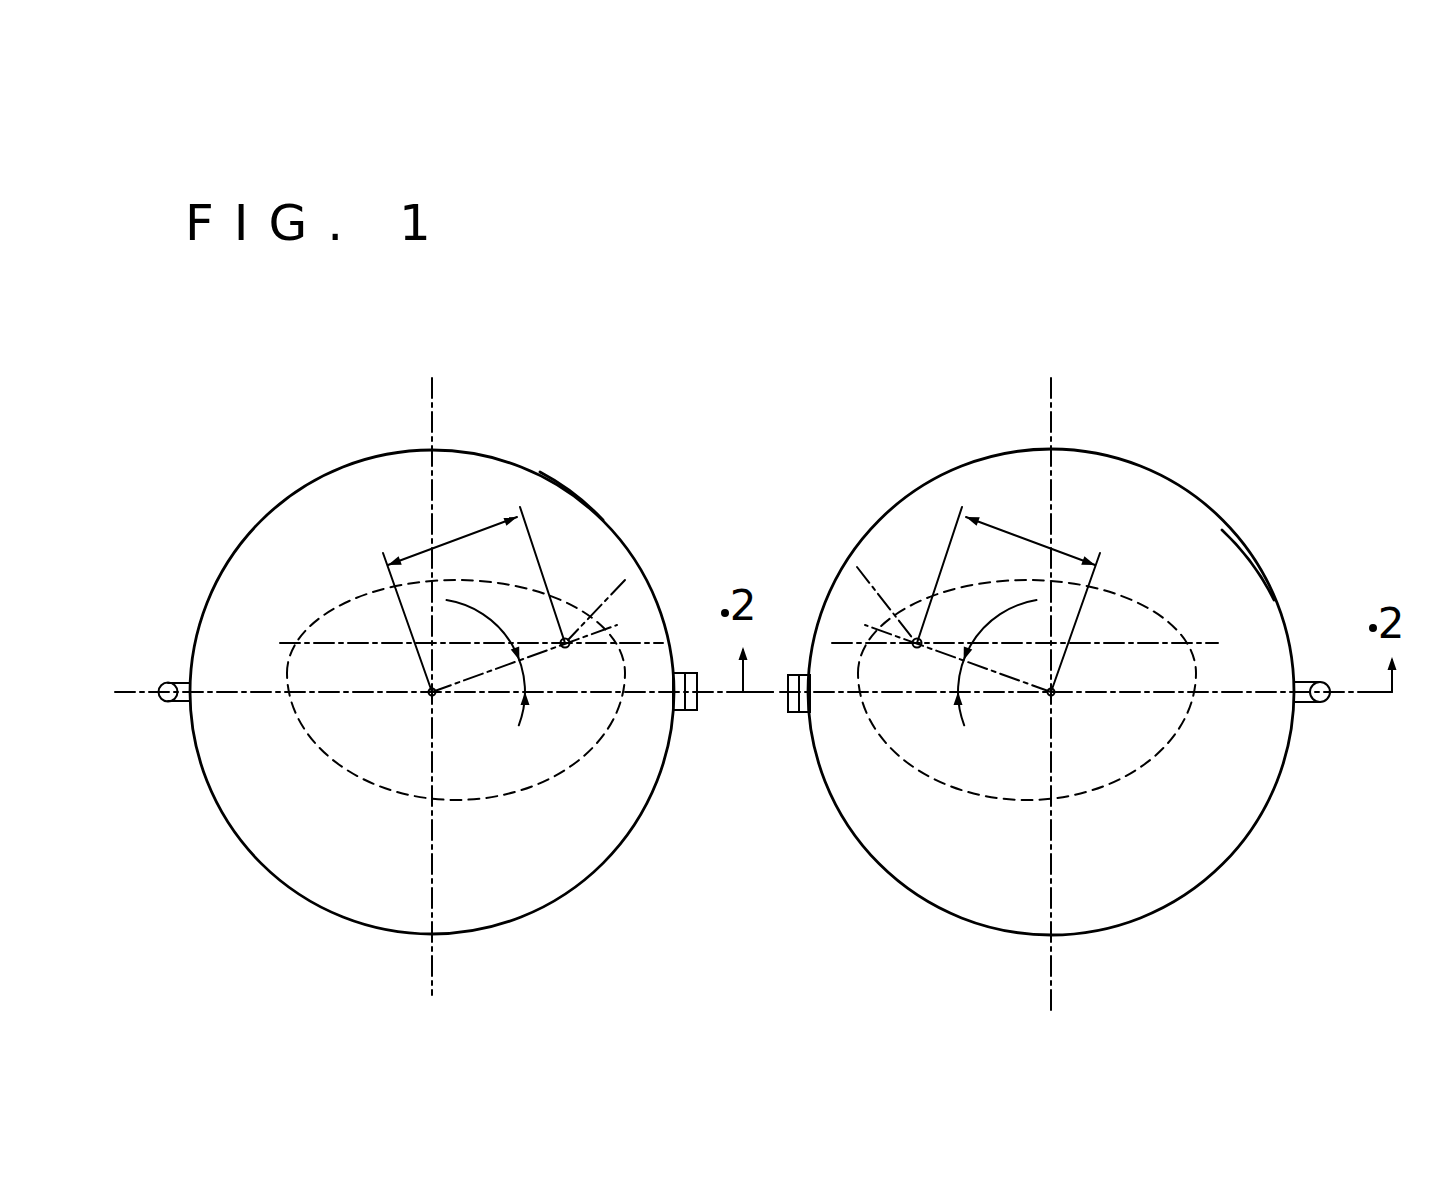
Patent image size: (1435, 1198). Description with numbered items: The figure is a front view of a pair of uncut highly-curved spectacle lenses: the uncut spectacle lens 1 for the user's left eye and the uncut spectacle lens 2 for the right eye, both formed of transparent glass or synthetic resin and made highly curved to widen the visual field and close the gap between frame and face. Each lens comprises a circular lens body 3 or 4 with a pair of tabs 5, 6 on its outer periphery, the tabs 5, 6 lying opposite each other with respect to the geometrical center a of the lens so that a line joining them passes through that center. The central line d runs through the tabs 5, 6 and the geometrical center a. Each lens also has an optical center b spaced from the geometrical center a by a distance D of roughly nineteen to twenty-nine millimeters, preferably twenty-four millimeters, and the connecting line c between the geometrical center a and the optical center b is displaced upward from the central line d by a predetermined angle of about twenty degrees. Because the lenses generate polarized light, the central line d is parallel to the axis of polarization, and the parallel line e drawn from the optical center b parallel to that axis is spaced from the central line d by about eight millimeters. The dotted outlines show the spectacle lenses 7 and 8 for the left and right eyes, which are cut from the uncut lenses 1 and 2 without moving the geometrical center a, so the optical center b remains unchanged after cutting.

The uncut highly-curved spectacle lens 1 is at (1167, 470).
The uncut highly-curved spectacle lens 2 is at (508, 453).
The circular lens body 3 is at (1248, 583).
The circular lens body 4 is at (550, 513).
The tab 5 is at (187, 680).
The tab 6 is at (687, 672).
The spectacle lens 7 is at (1157, 600).
The spectacle lens 8 is at (340, 593).
The geometrical center a is at (432, 692).
The optical center b is at (566, 639).
The connecting line c is at (625, 580).
The central line d is at (560, 693).
The parallel line e is at (317, 647).
The distance D is at (427, 553).